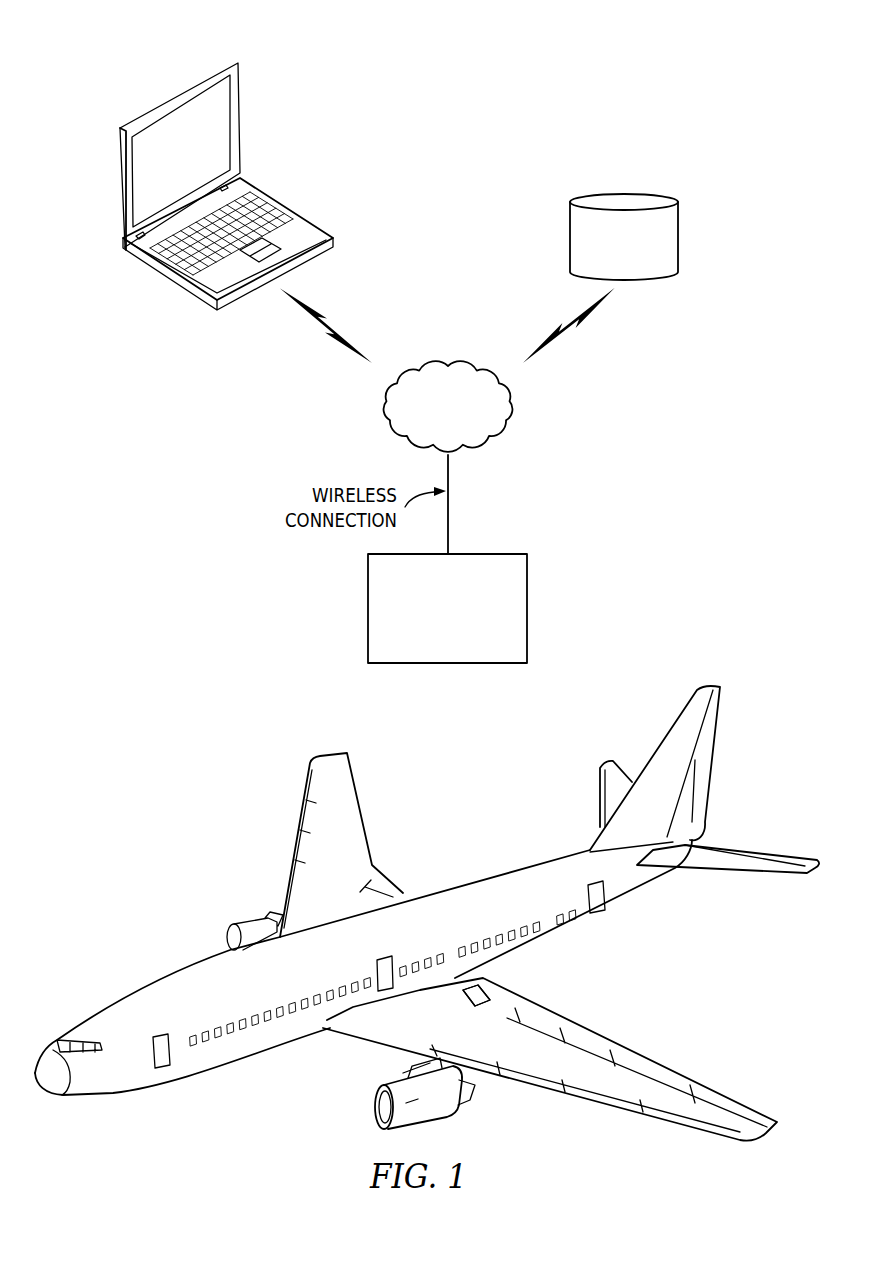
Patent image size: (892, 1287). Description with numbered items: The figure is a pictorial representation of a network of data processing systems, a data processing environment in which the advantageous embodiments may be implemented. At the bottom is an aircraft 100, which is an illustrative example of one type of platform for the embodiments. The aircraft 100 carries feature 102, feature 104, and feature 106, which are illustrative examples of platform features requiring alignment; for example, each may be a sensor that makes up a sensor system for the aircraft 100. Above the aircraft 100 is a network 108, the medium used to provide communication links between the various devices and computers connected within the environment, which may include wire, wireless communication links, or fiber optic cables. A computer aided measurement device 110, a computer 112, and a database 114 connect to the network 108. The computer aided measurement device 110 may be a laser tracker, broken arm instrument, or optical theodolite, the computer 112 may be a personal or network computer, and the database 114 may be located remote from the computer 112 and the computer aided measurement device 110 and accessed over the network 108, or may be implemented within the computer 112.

The aircraft 100 is at (427, 913).
The feature 102 is at (270, 1042).
The feature 104 is at (496, 962).
The feature 106 is at (621, 898).
The network 108 is at (450, 362).
The computer aided measurement device 110 is at (527, 612).
The computer 112 is at (141, 79).
The database 114 is at (680, 236).